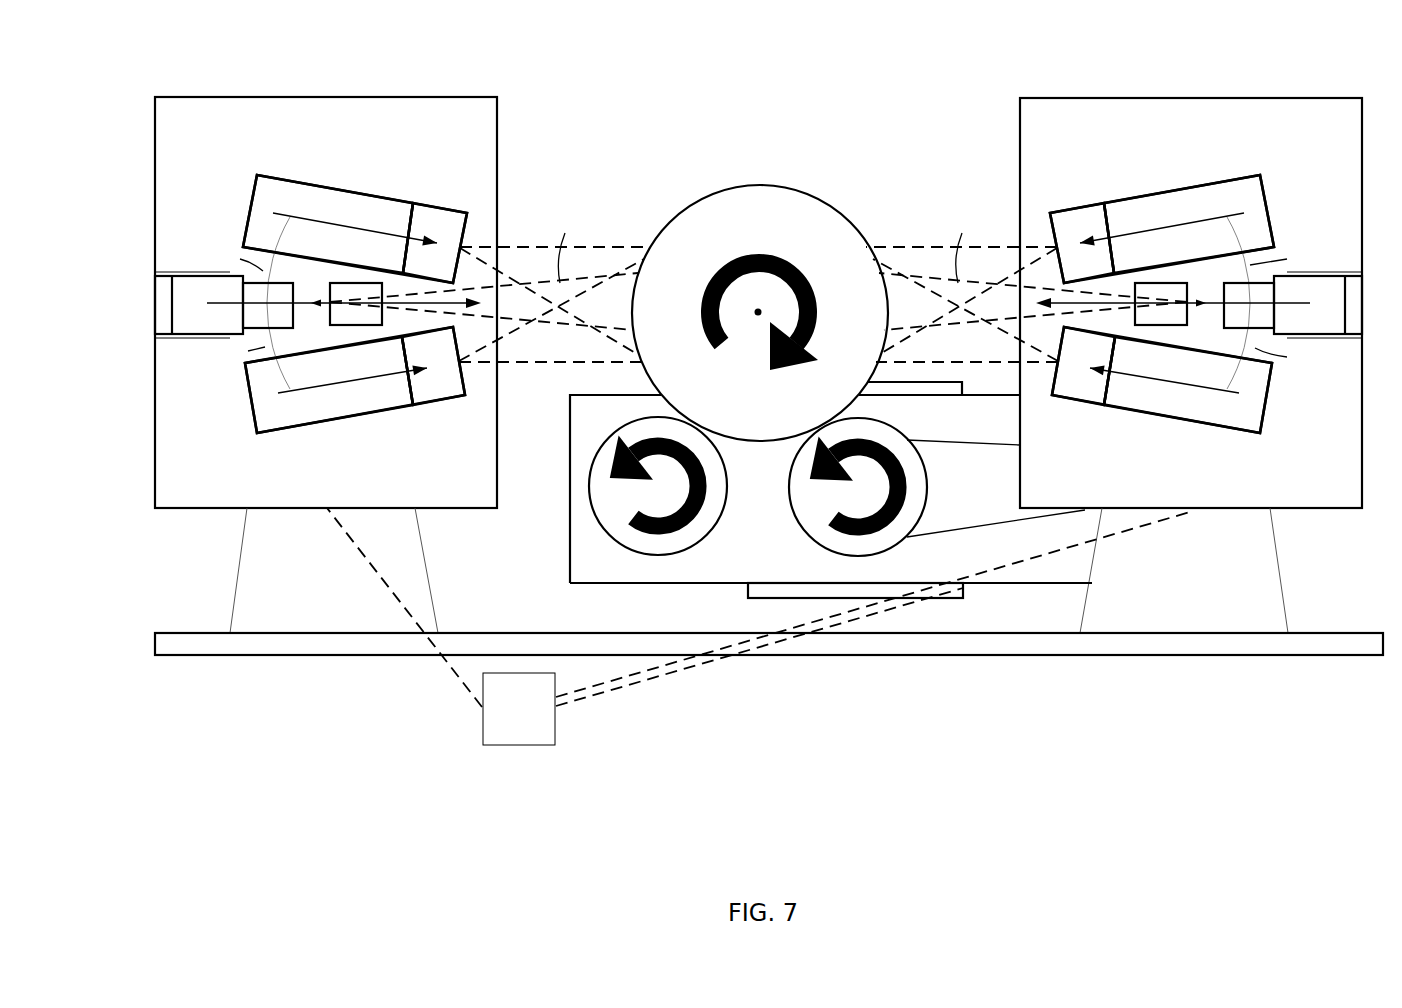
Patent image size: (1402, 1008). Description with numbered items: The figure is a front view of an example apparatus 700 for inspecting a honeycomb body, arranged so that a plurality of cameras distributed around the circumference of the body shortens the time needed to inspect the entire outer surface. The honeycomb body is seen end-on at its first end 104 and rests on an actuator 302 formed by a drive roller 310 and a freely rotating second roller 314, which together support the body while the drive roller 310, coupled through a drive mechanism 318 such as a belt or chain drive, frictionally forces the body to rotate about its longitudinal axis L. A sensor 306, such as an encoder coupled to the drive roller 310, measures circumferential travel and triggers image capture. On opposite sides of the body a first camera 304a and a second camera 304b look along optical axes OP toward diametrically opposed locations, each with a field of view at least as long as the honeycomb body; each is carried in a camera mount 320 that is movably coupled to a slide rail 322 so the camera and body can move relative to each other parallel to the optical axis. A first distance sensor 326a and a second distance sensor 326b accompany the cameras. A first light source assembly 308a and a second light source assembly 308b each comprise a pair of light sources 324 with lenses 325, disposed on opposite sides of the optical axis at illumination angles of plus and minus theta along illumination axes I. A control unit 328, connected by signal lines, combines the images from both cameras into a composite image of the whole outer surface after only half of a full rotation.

The apparatus 700 is at (578, 64).
The camera mount 320 is at (228, 117).
The first light source assembly 308a is at (377, 177).
The second light source assembly 308b is at (1154, 178).
The light source 324 is at (298, 194).
The lens 325 is at (437, 205).
The first camera 304a is at (187, 298).
The second camera 304b is at (1322, 288).
The first distance sensor 326a is at (368, 323).
The second distance sensor 326b is at (1168, 323).
The first end 104 is at (760, 313).
The actuator 302 is at (831, 548).
The drive mechanism 318 is at (963, 467).
The drive roller 310 is at (808, 500).
The second roller 314 is at (643, 543).
The sensor 306 is at (938, 598).
The slide rail 322 is at (348, 648).
The control unit 328 is at (758, 626).